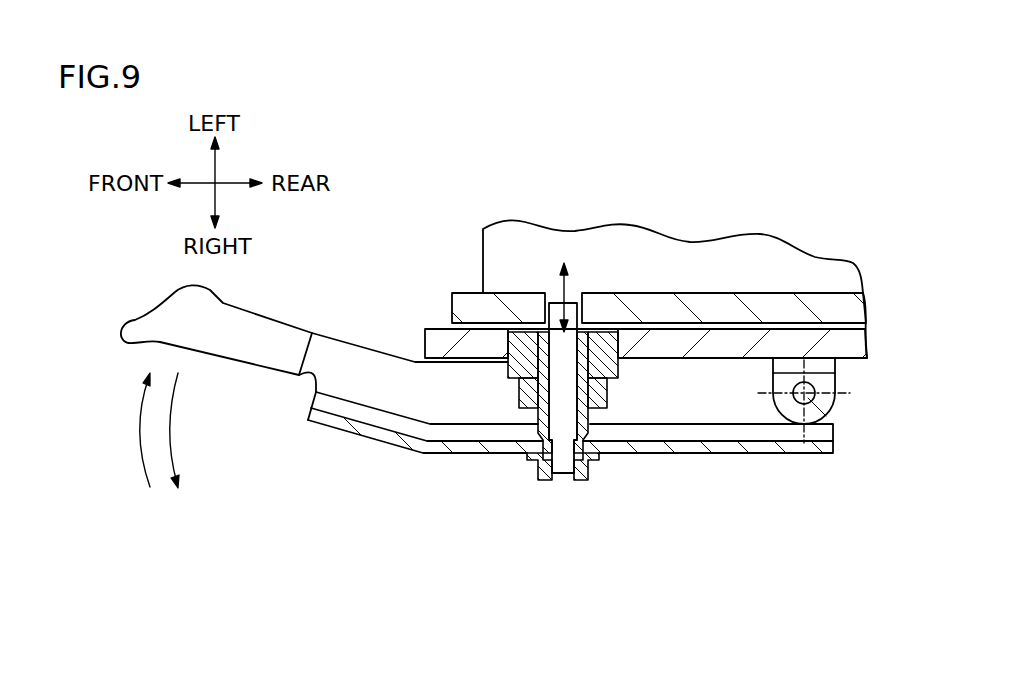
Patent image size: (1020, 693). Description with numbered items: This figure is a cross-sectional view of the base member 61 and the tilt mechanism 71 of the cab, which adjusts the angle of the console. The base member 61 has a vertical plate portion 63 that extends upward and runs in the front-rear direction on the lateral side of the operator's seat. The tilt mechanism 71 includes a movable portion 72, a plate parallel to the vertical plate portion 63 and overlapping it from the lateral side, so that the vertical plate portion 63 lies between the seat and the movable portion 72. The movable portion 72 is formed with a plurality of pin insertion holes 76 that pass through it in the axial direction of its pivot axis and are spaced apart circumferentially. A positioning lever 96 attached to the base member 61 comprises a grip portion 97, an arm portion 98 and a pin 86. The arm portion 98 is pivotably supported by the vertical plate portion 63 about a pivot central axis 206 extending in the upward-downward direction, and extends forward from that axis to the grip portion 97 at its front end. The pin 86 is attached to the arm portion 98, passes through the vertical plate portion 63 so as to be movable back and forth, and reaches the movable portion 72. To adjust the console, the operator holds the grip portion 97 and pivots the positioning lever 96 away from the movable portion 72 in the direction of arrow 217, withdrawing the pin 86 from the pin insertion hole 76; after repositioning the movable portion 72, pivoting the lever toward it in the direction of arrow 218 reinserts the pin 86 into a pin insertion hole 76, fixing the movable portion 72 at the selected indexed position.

The base member 61 is at (871, 345).
The vertical plate portion 63 is at (437, 343).
The tilt mechanism 71 is at (445, 310).
The movable portion 72 is at (842, 311).
The pin insertion hole 76 is at (553, 301).
The pin 86 is at (565, 413).
The positioning lever 96 is at (341, 438).
The grip portion 97 is at (238, 345).
The arm portion 98 is at (724, 432).
The pivot central axis 206 is at (833, 417).
The arrow 217 is at (170, 442).
The arrow 218 is at (140, 438).